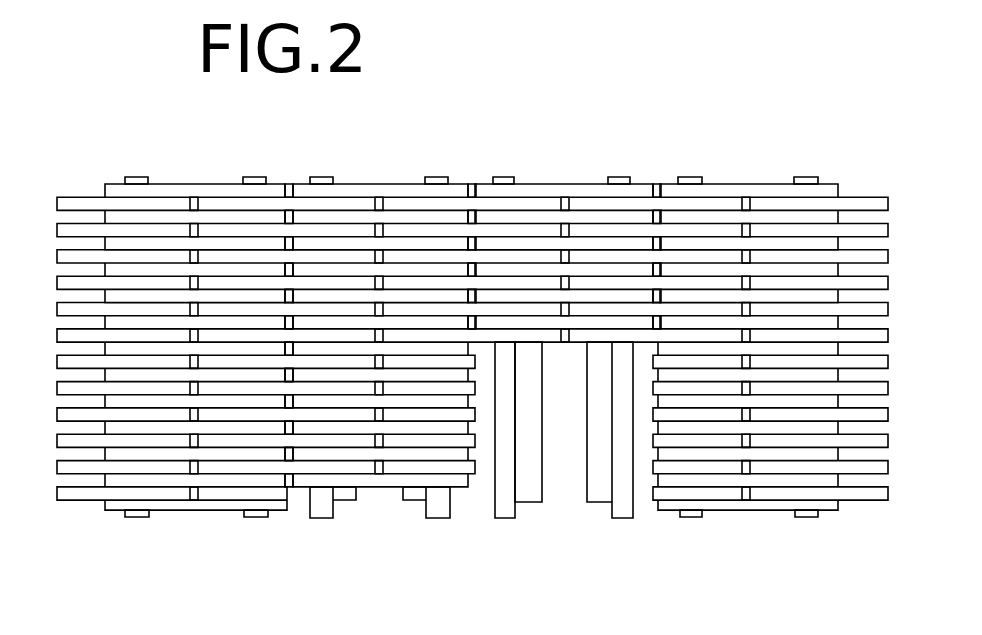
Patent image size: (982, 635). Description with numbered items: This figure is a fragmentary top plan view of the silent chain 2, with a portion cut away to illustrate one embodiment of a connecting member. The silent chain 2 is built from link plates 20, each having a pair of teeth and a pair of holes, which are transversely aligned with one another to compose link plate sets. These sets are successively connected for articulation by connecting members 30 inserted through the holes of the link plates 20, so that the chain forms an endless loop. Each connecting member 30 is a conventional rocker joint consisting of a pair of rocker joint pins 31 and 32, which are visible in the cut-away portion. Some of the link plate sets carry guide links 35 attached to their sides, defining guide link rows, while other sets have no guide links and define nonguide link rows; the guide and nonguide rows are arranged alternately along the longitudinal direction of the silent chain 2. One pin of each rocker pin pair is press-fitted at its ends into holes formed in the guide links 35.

The silent chain 2 is at (802, 158).
The link plates 20 is at (480, 203).
The guide links 35 is at (383, 184).
The connecting members 30 is at (523, 467).
The rocker joint pin 31 is at (505, 508).
The rocker joint pin 32 is at (532, 490).